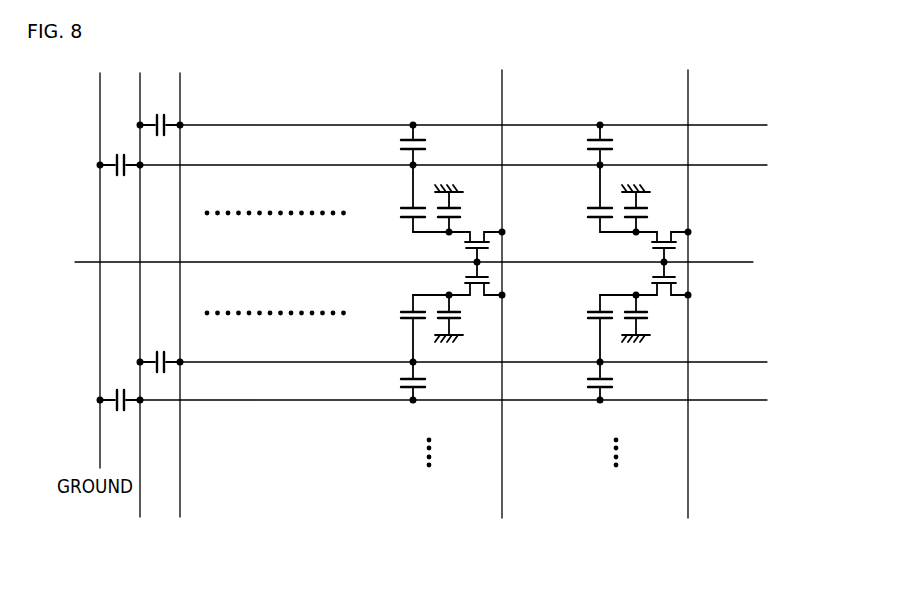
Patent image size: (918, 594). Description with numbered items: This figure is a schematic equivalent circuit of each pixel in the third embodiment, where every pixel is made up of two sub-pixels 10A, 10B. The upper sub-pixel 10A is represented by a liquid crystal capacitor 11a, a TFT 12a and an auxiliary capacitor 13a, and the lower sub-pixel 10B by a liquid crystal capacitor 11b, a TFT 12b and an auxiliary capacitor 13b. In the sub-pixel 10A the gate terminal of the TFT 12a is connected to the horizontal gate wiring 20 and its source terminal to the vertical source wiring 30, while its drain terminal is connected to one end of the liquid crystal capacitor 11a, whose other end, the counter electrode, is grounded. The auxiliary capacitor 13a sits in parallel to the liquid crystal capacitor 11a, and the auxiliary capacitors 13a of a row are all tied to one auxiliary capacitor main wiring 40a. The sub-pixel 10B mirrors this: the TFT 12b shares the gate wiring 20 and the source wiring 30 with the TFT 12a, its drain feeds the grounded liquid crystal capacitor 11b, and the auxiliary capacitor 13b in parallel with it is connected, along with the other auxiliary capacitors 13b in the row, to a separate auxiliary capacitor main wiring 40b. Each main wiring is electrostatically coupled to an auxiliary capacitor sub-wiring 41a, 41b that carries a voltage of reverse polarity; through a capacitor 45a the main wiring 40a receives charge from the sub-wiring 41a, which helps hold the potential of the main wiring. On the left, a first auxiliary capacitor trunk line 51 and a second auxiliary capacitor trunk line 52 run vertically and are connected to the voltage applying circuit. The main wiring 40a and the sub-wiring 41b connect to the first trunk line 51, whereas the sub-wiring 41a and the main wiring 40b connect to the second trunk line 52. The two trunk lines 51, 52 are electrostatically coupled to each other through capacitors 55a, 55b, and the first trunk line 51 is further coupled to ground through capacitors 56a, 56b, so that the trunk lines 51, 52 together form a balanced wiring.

The sub-pixel 10A is at (399, 200).
The sub-pixel 10B is at (401, 338).
The liquid crystal capacitor 11a is at (467, 213).
The liquid crystal capacitor 11b is at (463, 312).
The TFT 12a is at (462, 243).
The TFT 12b is at (462, 280).
The auxiliary capacitor 13a is at (402, 212).
The auxiliary capacitor 13b is at (402, 305).
The gate wiring 20 is at (723, 262).
The source wiring 30 is at (502, 500).
The auxiliary capacitor main wiring 40a is at (707, 165).
The auxiliary capacitor main wiring 40b is at (707, 362).
The auxiliary capacitor sub-wiring 41a is at (707, 125).
The auxiliary capacitor sub-wiring 41b is at (707, 400).
The capacitor 45a is at (430, 147).
The first auxiliary capacitor trunk line 51 is at (141, 513).
The second auxiliary capacitor trunk line 52 is at (180, 496).
The capacitor 55a is at (162, 105).
The capacitor 55b is at (162, 378).
The capacitor 56a is at (118, 152).
The capacitor 56b is at (118, 418).